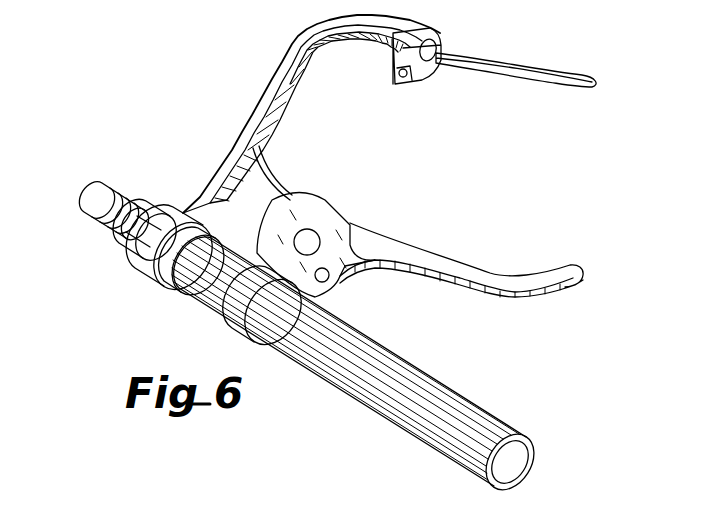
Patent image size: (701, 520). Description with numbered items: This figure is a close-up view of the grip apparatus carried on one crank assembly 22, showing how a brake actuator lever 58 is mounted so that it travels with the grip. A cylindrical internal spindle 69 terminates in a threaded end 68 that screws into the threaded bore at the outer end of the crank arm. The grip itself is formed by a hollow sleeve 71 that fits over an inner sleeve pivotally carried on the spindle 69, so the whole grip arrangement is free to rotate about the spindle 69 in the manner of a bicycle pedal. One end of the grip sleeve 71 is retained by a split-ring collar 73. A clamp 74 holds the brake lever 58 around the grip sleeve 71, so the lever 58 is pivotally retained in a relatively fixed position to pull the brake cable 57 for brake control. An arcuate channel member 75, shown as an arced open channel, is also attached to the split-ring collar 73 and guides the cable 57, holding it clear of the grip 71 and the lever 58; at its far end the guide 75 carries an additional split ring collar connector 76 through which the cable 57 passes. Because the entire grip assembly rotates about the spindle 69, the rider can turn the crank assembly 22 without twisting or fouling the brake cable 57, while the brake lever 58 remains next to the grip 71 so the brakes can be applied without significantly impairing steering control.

The crank assembly 22 is at (195, 100).
The brake cable 57 is at (515, 80).
The brake actuator lever 58 is at (524, 278).
The threaded end 68 is at (100, 226).
The cylindrical internal spindle 69 is at (148, 182).
The hollow grip sleeve 71 is at (385, 400).
The split-ring collar 73 is at (166, 268).
The clamp 74 is at (250, 322).
The arcuate channel member 75 is at (288, 66).
The split ring collar connector 76 is at (396, 68).